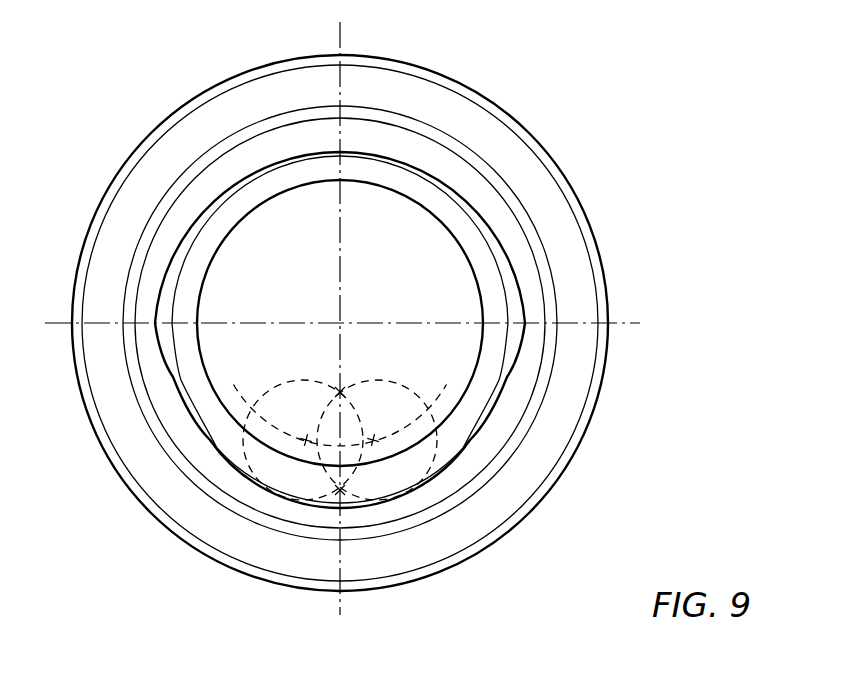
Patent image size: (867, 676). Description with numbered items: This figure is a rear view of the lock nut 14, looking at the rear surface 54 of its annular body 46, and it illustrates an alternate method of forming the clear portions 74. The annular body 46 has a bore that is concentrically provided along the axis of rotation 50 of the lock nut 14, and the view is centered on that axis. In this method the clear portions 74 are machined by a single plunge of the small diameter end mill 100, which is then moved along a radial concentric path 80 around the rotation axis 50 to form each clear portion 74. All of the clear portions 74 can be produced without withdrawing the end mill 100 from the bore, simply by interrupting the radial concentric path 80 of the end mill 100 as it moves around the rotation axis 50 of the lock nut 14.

The lock nut 14 is at (60, 118).
The rear surface 54 is at (440, 96).
The clear portions 74 is at (383, 508).
The annular body 46 is at (460, 447).
The axis of rotation 50 is at (340, 323).
The radial concentric path 80 is at (446, 389).
The small diameter end mill 100 is at (348, 387).